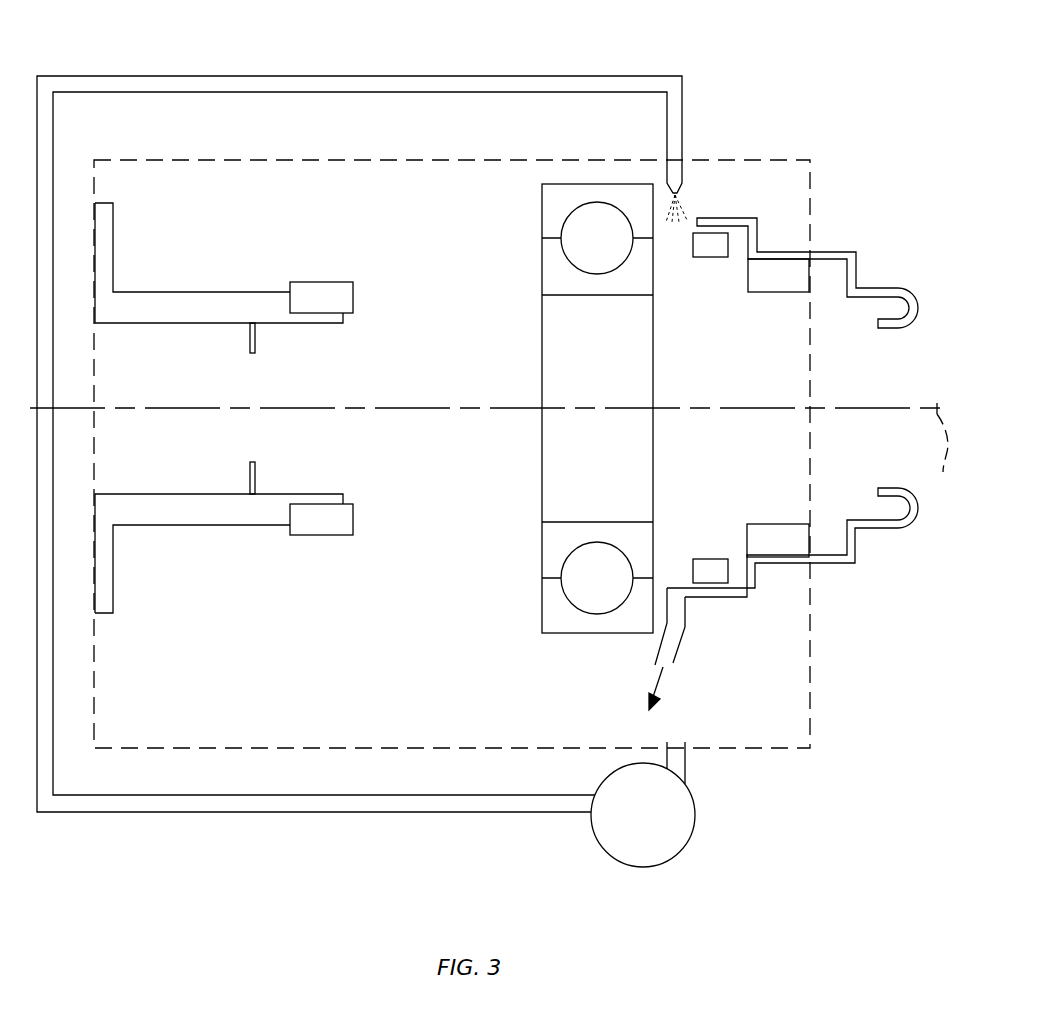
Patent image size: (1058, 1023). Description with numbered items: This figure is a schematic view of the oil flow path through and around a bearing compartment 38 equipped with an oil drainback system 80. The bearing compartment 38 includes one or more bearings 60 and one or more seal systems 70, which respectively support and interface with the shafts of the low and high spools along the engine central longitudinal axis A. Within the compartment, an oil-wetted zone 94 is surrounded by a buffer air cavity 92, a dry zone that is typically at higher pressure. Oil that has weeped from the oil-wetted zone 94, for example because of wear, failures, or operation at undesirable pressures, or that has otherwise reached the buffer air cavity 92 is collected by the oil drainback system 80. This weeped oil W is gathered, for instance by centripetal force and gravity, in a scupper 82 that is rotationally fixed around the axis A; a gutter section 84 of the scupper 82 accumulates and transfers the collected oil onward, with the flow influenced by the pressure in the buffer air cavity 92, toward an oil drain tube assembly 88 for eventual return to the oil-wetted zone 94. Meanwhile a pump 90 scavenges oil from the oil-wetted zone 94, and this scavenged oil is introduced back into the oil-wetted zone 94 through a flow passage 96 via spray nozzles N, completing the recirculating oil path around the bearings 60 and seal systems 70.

The bearing compartment 38 is at (756, 91).
The bearing 60 is at (553, 220).
The seal system 70 is at (312, 303).
The oil drainback system 80 is at (883, 270).
The scupper 82 is at (862, 520).
The gutter section 84 is at (733, 580).
The oil drain tube assembly 88 is at (657, 653).
The pump 90 is at (655, 825).
The buffer air cavity 92 is at (223, 142).
The oil-wetted zone 94 is at (810, 698).
The flow passage 96 is at (272, 813).
The spray nozzle N is at (681, 185).
The weeped oil W is at (656, 688).
The engine central longitudinal axis A is at (942, 460).